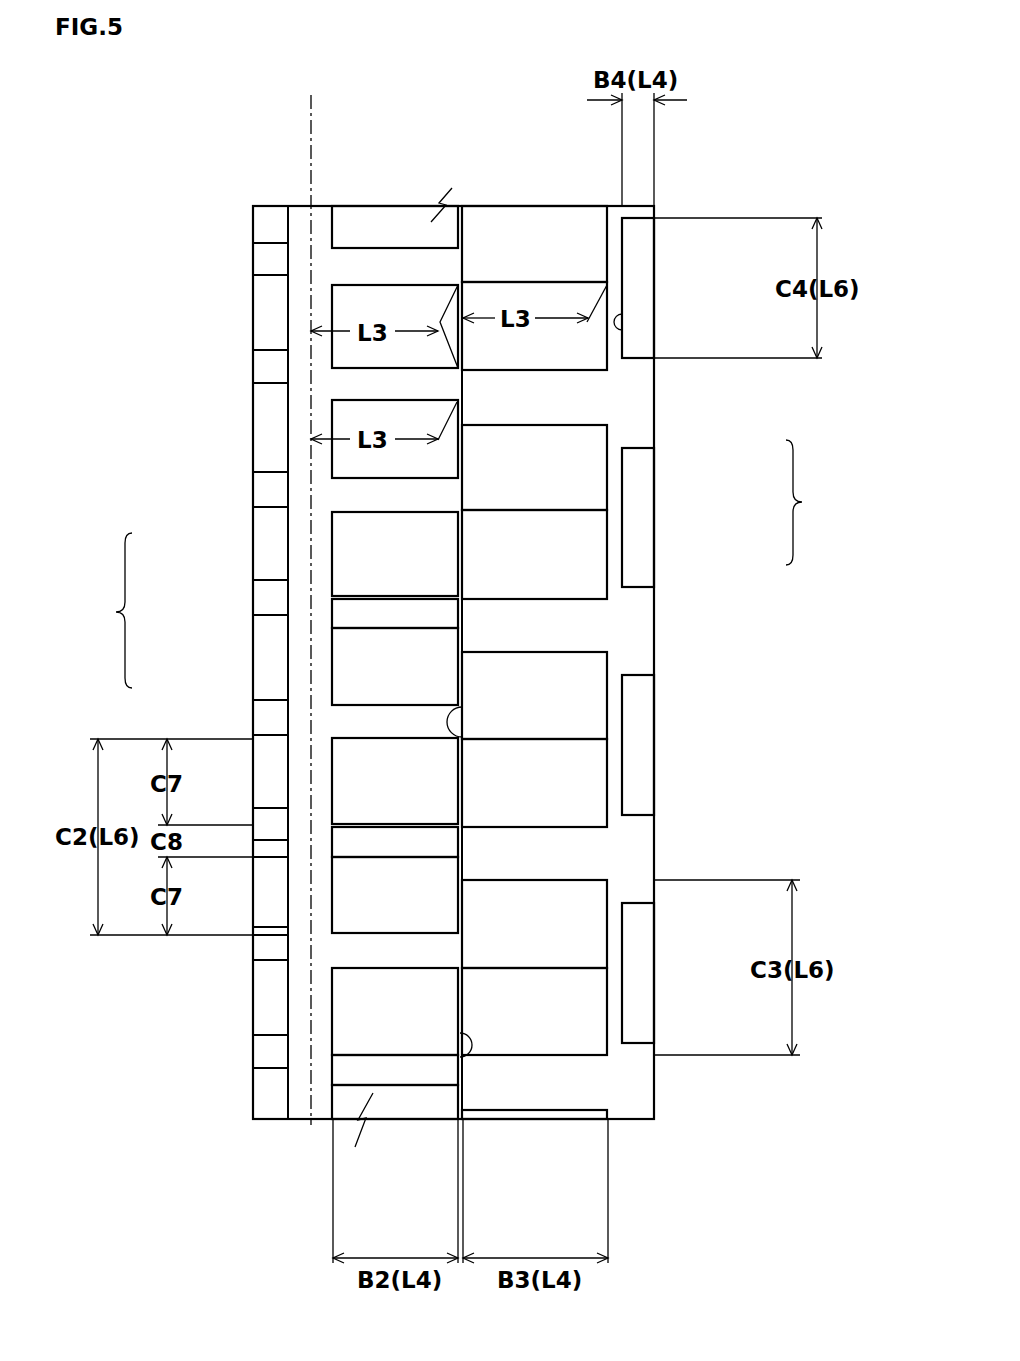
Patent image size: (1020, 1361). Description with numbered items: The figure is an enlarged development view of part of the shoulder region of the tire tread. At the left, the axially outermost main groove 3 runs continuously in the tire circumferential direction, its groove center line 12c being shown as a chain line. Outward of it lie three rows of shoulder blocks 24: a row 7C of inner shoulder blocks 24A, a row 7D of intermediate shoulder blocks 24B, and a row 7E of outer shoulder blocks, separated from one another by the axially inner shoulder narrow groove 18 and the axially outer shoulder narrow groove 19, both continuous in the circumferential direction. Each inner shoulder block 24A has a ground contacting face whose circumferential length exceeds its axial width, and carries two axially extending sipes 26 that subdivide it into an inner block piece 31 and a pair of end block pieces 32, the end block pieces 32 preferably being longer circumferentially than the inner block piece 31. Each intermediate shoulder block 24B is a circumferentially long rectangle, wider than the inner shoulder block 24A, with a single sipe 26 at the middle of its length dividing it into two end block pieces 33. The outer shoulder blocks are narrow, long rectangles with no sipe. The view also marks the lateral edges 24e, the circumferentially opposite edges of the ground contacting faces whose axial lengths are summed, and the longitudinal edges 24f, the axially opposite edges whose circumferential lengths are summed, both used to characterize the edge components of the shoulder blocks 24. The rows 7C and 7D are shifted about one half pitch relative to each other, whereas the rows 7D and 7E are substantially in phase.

The main groove 3 is at (300, 233).
The groove center line of shoulder main groove 12c is at (310, 598).
The axially inner shoulder narrow groove 18 is at (452, 188).
The axially outer shoulder narrow groove 19 is at (619, 232).
The row of inner shoulder blocks 7C is at (389, 300).
The row of intermediate shoulder blocks 7D is at (497, 263).
The row of outer shoulder blocks 7E is at (636, 270).
The shoulder block 24 is at (397, 1093).
The inner shoulder block 24A is at (94, 610).
The intermediate shoulder block 24B is at (820, 502).
The lateral edge 24e is at (400, 513).
The longitudinal edge 24f is at (654, 285).
The sipe 26 is at (560, 282).
The inner block piece 31 is at (360, 612).
The end block piece 32 is at (360, 555).
The end block piece 33 is at (545, 455).